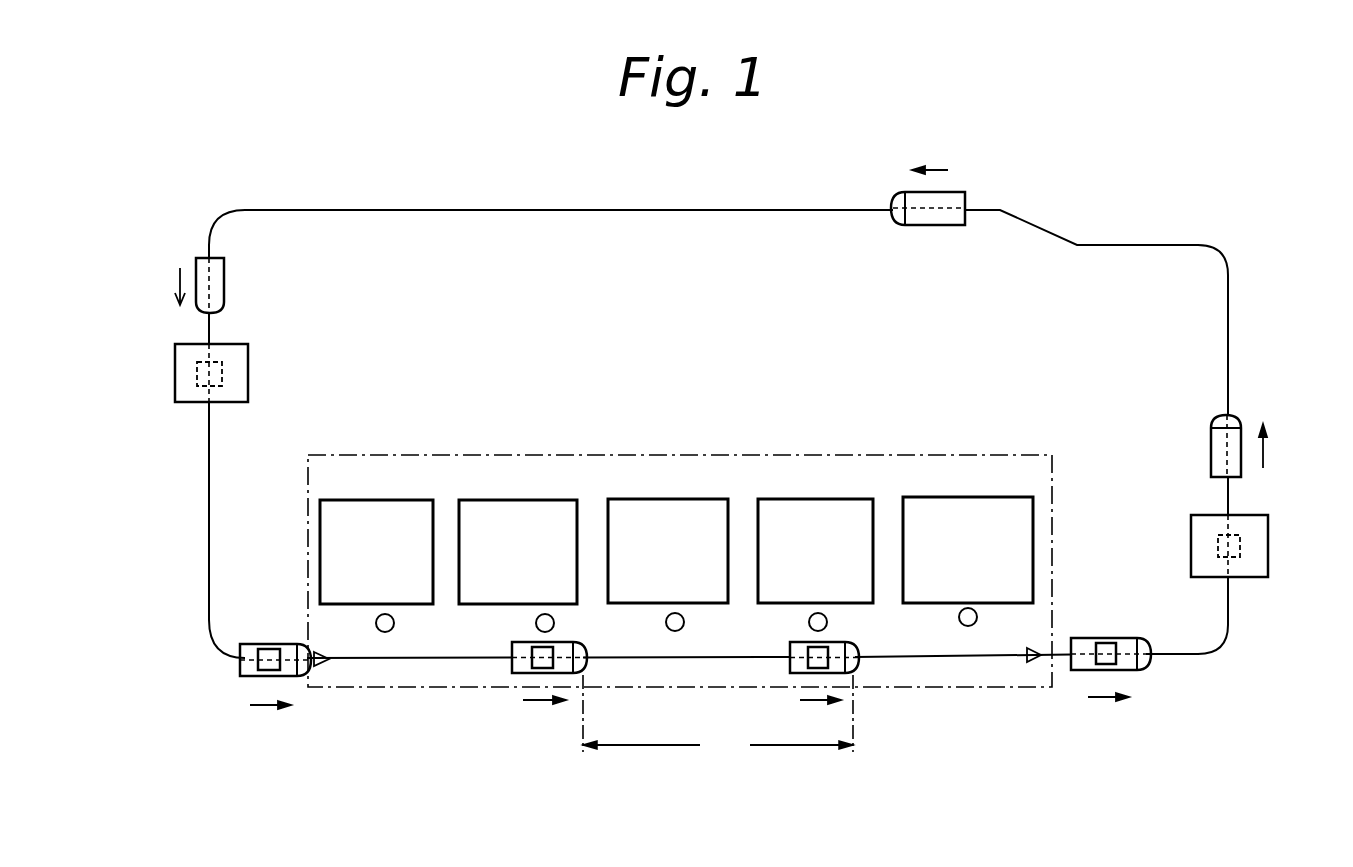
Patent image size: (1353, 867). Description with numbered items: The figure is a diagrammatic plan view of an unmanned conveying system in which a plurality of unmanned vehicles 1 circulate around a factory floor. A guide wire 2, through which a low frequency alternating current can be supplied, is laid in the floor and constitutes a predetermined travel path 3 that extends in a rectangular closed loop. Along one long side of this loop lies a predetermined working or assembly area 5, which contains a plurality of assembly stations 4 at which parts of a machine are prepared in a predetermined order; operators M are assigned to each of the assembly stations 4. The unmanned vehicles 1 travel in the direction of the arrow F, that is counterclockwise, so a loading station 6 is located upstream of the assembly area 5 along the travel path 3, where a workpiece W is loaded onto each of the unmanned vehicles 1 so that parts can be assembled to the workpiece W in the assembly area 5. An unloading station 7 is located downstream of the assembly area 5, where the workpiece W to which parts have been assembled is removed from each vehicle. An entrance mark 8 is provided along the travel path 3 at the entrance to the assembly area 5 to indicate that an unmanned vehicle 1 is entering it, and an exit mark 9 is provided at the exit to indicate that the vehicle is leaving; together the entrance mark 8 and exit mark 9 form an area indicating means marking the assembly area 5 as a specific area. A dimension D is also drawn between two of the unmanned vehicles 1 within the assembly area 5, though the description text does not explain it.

The unmanned vehicle 1 is at (224, 285).
The guide wire 2 is at (208, 528).
The travel path 3 is at (208, 596).
The assembly station 4 is at (405, 502).
The assembly area 5 is at (650, 455).
The loading station 6 is at (174, 372).
The unloading station 7 is at (1272, 547).
The entrance mark 8 is at (322, 652).
The exit mark 9 is at (1035, 652).
The workpiece W is at (222, 366).
The operator M is at (394, 626).
The arrow indicating travel direction F is at (178, 284).
The spacing D is at (718, 719).